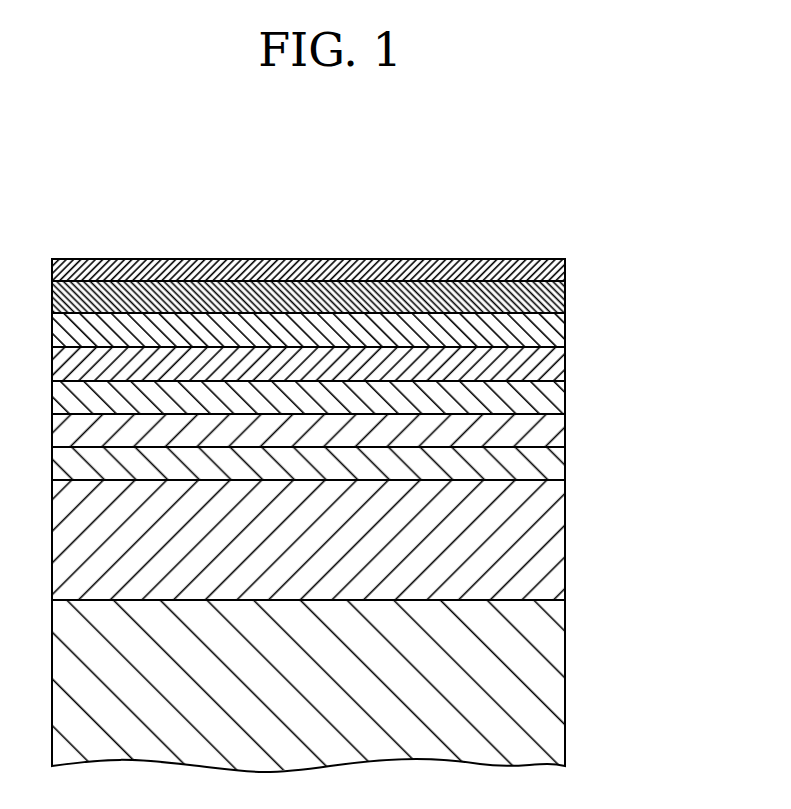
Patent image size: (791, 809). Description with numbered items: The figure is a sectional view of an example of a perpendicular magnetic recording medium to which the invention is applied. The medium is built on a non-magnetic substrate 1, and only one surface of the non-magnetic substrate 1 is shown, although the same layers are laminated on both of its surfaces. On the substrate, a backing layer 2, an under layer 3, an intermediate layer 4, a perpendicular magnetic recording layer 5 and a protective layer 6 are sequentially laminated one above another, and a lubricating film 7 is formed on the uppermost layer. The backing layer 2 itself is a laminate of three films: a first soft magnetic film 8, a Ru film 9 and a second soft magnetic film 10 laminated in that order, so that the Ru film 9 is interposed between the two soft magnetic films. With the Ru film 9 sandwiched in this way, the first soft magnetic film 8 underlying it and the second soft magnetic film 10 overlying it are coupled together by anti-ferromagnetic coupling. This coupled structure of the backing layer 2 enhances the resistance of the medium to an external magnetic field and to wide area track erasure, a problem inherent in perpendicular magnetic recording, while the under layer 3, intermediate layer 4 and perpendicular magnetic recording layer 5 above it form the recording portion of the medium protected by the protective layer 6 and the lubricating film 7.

The non-magnetic substrate 1 is at (565, 660).
The backing layer 2 is at (372, 506).
The under layer 3 is at (565, 398).
The intermediate layer 4 is at (565, 364).
The perpendicular magnetic recording layer 5 is at (565, 331).
The protective layer 6 is at (565, 300).
The lubricating film 7 is at (565, 276).
The first soft magnetic film 8 is at (341, 540).
The Ru film 9 is at (565, 465).
The second soft magnetic film 10 is at (565, 431).